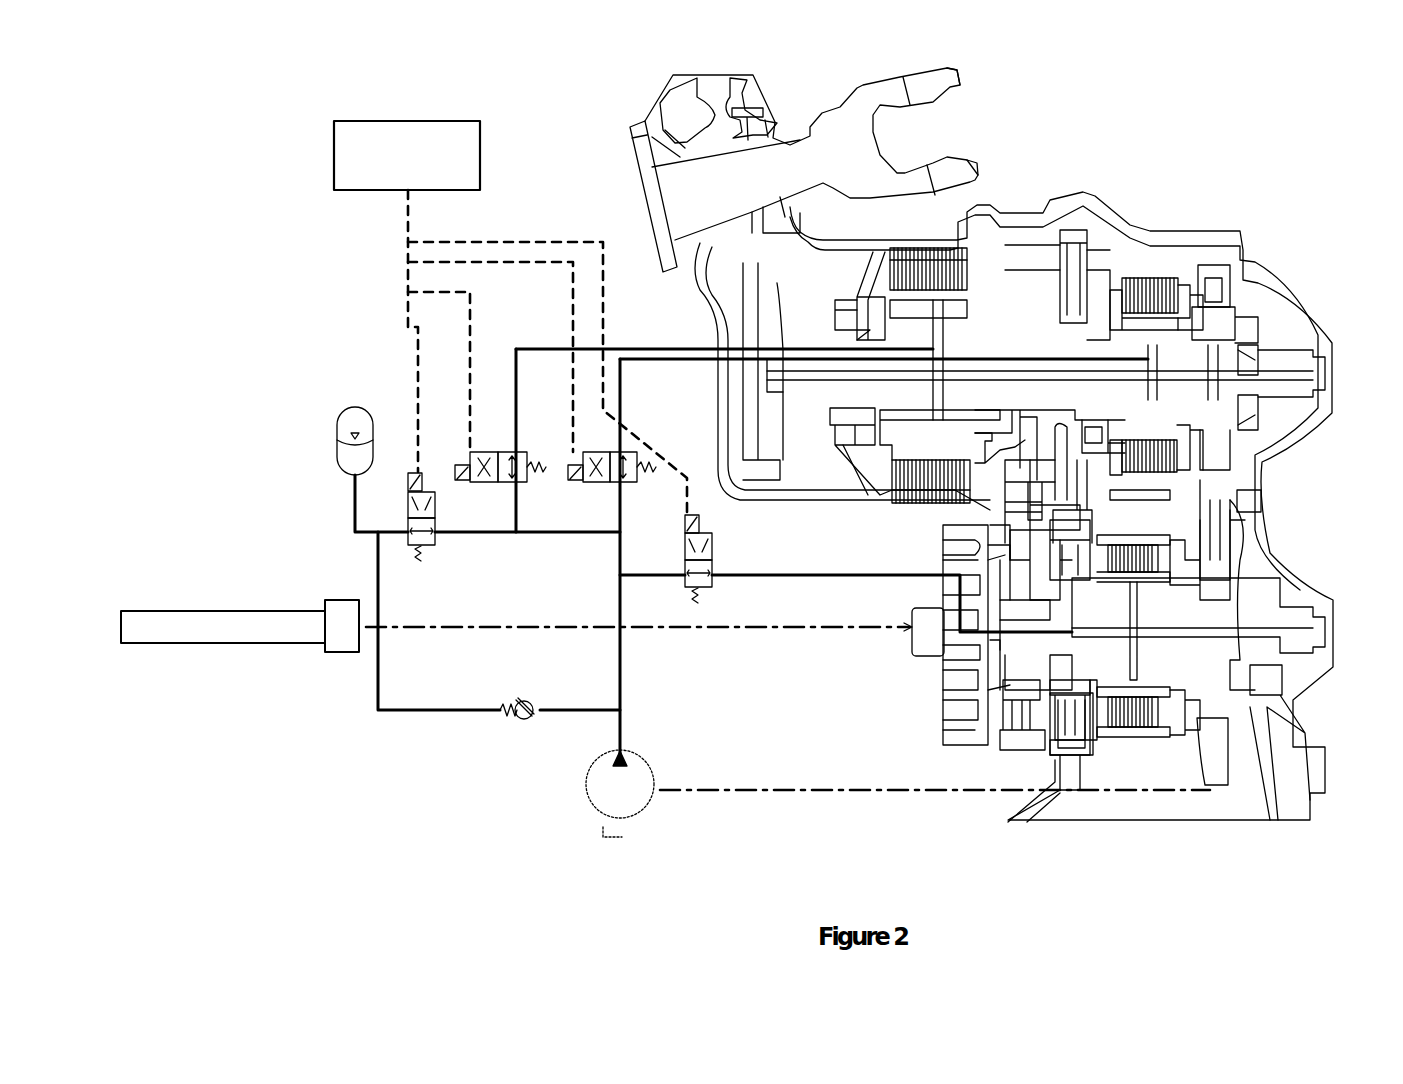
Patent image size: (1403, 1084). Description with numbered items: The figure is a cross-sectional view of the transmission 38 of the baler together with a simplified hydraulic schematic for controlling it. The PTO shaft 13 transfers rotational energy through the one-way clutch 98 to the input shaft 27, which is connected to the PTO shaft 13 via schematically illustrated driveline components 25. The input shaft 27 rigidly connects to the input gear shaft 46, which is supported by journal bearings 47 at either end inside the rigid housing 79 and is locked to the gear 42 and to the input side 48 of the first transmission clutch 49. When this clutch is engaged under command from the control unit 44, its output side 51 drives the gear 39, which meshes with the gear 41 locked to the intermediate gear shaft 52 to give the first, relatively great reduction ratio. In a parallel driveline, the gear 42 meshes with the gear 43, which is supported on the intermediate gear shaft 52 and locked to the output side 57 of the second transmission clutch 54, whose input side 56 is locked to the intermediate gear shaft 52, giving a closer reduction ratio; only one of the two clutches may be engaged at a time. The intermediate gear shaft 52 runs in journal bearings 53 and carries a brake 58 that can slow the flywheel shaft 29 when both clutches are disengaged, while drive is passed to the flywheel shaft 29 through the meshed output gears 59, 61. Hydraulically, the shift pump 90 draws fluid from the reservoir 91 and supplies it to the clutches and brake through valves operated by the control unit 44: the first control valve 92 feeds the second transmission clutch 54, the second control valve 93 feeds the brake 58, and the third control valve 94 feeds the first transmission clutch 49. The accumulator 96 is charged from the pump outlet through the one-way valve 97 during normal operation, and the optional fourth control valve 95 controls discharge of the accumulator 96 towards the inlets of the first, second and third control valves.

The PTO shaft 13 is at (232, 610).
The driveline components 25 is at (770, 635).
The input shaft 27 is at (918, 628).
The flywheel shaft 29 is at (790, 135).
The transmission 38 is at (813, 512).
The gear 39 is at (1065, 740).
The gear 41 is at (1070, 240).
The gear 42 is at (1210, 540).
The gear 43 is at (1215, 282).
The control unit 44 is at (372, 120).
The input gear shaft 46 is at (1270, 612).
The journal bearings 47 is at (945, 718).
The input side 48 is at (1132, 740).
The first transmission clutch 49 is at (1097, 745).
The output side 51 is at (1092, 752).
The intermediate gear shaft 52 is at (780, 375).
The journal bearings 53 is at (840, 445).
The second transmission clutch 54 is at (1182, 285).
The input side 56 is at (1145, 278).
The output side 57 is at (1205, 290).
The brake 58 is at (965, 250).
The output gear 59 is at (760, 455).
The output gear 61 is at (750, 258).
The housing 79 is at (700, 305).
The hydraulic shift pump 90 is at (653, 808).
The reservoir 91 is at (625, 845).
The first control valve 92 is at (590, 452).
The second control valve 93 is at (498, 452).
The third control valve 94 is at (683, 560).
The fourth control valve 95 is at (437, 518).
The accumulator 96 is at (343, 405).
The one-way valve 97 is at (530, 720).
The one-way clutch 98 is at (340, 600).